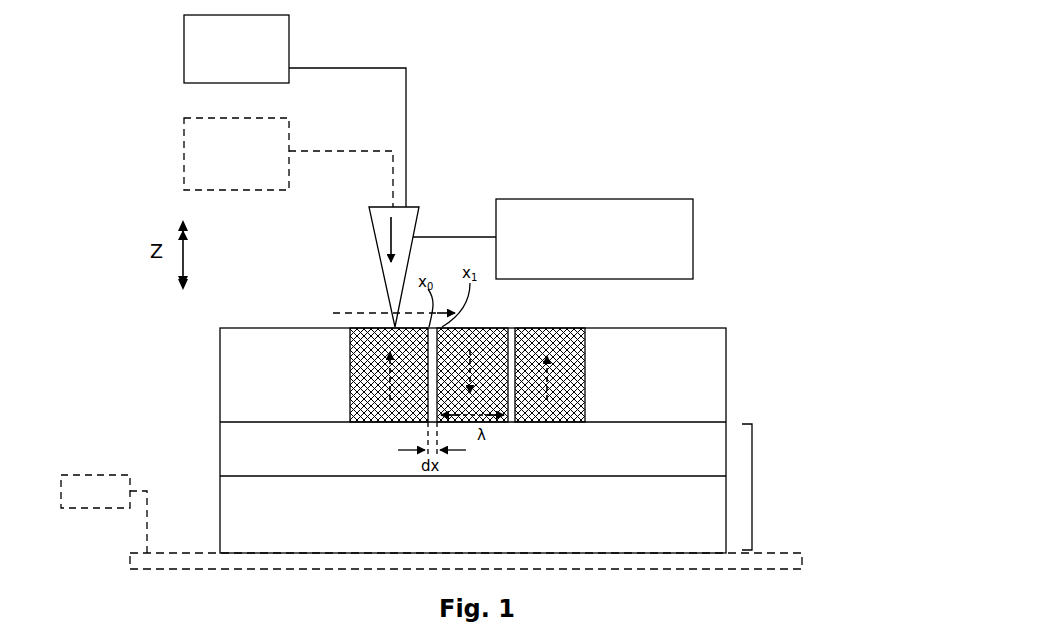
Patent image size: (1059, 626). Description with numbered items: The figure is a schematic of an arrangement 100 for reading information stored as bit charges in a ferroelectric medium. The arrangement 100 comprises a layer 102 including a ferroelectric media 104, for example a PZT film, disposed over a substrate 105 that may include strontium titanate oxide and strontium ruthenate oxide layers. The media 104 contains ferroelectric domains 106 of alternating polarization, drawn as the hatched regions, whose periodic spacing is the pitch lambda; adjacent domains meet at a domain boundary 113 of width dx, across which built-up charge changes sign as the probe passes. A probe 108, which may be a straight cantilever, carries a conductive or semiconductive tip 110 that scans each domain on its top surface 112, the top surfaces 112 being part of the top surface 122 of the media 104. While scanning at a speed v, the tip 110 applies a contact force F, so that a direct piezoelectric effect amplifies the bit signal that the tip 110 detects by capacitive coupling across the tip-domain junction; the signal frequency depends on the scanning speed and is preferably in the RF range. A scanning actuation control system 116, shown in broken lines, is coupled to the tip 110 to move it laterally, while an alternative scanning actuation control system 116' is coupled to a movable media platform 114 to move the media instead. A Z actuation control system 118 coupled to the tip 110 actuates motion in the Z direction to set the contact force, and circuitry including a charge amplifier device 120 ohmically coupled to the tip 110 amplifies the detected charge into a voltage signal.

The arrangement 100 is at (600, 154).
The layer 102 is at (203, 375).
The ferroelectric media 104 is at (730, 356).
The substrate 105 is at (771, 487).
The ferroelectric domains 106 is at (360, 378).
The probe 108 is at (360, 246).
The tip 110 is at (390, 285).
The top surface 112 is at (483, 327).
The domain boundary 113 is at (508, 350).
The movable media platform 114 is at (757, 561).
The scanning actuation control system 116 is at (288, 162).
The scanning actuation control system 116' is at (104, 514).
The Z actuation control system 118 is at (295, 111).
The charge amplifier device 120 is at (553, 239).
The top surface of media 122 is at (280, 311).